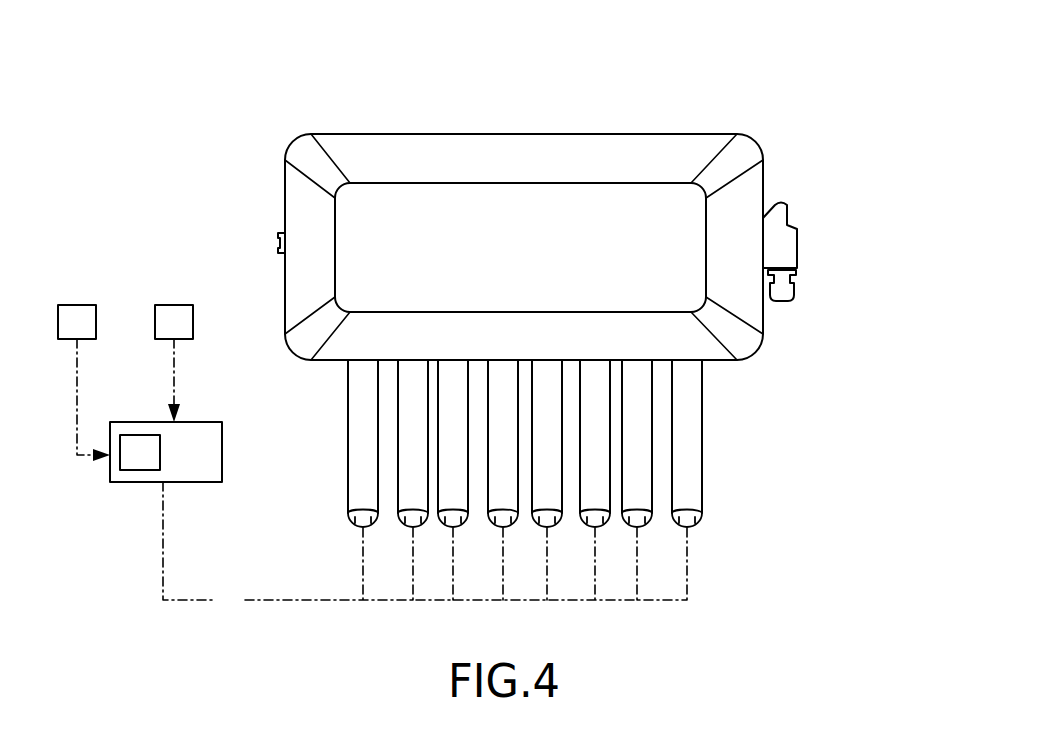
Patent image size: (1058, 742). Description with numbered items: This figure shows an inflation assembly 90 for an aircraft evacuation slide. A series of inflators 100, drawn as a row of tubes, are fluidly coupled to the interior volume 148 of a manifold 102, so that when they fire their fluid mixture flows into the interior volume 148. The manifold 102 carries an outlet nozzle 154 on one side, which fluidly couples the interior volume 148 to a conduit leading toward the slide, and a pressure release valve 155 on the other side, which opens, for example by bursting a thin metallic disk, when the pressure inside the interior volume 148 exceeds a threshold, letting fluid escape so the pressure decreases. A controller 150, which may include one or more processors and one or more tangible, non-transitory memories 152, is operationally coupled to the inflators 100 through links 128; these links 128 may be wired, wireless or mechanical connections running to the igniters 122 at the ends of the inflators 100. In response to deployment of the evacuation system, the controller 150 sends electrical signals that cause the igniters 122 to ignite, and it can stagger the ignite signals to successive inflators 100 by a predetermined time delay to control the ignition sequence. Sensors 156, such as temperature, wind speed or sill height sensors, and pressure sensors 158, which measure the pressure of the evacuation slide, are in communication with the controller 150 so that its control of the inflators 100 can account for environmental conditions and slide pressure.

The inflation assembly 90 is at (187, 115).
The inflators 100 is at (745, 431).
The manifold 102 is at (653, 143).
The igniters 122 is at (714, 557).
The links 128 is at (425, 549).
The interior volume 148 is at (530, 248).
The controller 150 is at (198, 466).
The memories 152 is at (153, 466).
The outlet nozzle 154 is at (787, 242).
The pressure release valve 155 is at (278, 243).
The sensors 156 is at (90, 335).
The pressure sensors 158 is at (188, 335).